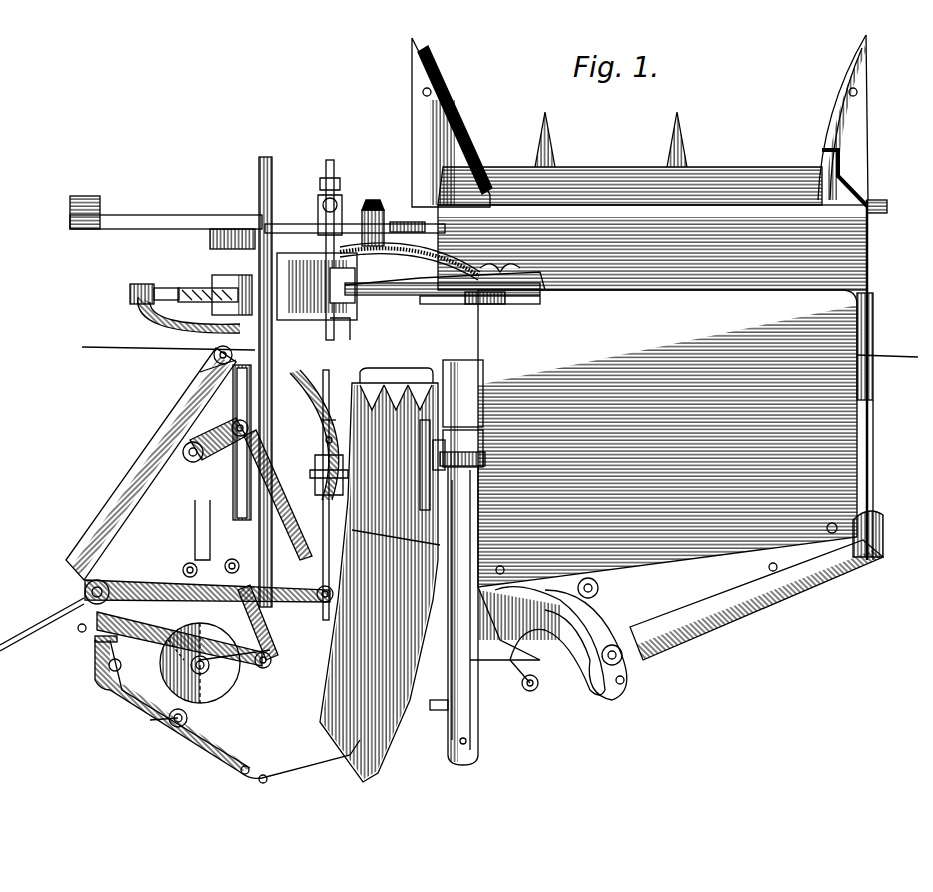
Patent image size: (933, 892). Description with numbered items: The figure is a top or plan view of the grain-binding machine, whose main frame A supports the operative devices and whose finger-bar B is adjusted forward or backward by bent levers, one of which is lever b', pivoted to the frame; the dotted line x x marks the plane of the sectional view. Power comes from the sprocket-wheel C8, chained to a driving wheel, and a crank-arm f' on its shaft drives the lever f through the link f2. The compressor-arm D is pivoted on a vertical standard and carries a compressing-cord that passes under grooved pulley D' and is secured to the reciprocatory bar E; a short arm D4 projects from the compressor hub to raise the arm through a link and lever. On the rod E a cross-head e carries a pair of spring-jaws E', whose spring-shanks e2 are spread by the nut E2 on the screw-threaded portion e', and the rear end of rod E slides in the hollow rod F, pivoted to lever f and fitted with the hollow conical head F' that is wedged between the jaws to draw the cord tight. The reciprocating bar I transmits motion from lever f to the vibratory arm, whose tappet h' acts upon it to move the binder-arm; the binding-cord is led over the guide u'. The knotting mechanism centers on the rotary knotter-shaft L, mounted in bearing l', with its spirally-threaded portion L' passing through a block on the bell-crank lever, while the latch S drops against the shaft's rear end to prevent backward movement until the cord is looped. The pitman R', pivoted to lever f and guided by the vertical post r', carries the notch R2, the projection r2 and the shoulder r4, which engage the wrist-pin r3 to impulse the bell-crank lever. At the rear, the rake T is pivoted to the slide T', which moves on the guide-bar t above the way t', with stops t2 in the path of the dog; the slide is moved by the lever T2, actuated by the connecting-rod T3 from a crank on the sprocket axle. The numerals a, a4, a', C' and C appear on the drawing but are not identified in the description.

The main frame A is at (443, 347).
The finger-bar B is at (662, 349).
The dotted line x x is at (495, 350).
The reciprocating bar I is at (273, 382).
The tappet h' is at (232, 224).
The reciprocatory bar E is at (339, 245).
The short arm D4 is at (379, 220).
The support block a4 is at (407, 215).
The rail a is at (355, 235).
The bent lever b' is at (317, 286).
The compressor-arm D is at (410, 257).
The grooved pulley D' is at (445, 267).
The guide u' is at (480, 305).
The guide a' is at (351, 330).
The rotary knotter-shaft L is at (204, 284).
The spirally-threaded portion L' is at (232, 293).
The bearing l' is at (152, 287).
The latch S is at (179, 315).
The pitman R' is at (229, 442).
The vertical post r' is at (229, 378).
The notch R2 is at (188, 425).
The projection r2 is at (200, 395).
The wrist-pin r3 is at (160, 448).
The shoulder r4 is at (191, 529).
The spring-jaws E' is at (291, 465).
The nut E2 is at (395, 368).
The cross-head e is at (337, 495).
The screw-threaded portion e' is at (352, 434).
The spring-shanks e2 is at (325, 412).
The rake T is at (379, 568).
The hollow conical head F' is at (405, 476).
The hollow rod F is at (394, 481).
The blade edge C' is at (396, 544).
The slide T' is at (463, 562).
The stops t2 is at (462, 435).
The guide-bar t is at (458, 610).
The way t' is at (439, 713).
The lever f is at (209, 581).
The link f2 is at (270, 645).
The sprocket-wheel C8 is at (236, 690).
The crank-arm f' is at (235, 657).
The lever T2 is at (227, 709).
The connecting-rod T3 is at (155, 732).
The hanger C is at (548, 639).